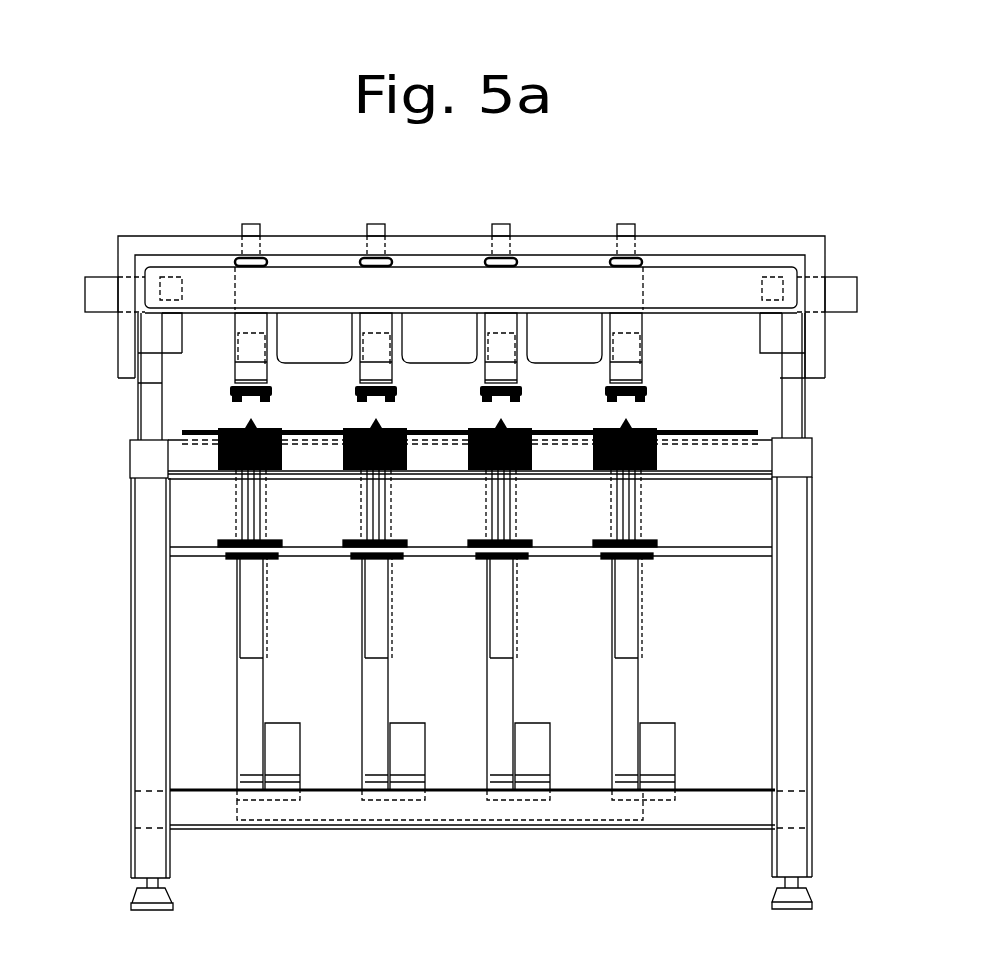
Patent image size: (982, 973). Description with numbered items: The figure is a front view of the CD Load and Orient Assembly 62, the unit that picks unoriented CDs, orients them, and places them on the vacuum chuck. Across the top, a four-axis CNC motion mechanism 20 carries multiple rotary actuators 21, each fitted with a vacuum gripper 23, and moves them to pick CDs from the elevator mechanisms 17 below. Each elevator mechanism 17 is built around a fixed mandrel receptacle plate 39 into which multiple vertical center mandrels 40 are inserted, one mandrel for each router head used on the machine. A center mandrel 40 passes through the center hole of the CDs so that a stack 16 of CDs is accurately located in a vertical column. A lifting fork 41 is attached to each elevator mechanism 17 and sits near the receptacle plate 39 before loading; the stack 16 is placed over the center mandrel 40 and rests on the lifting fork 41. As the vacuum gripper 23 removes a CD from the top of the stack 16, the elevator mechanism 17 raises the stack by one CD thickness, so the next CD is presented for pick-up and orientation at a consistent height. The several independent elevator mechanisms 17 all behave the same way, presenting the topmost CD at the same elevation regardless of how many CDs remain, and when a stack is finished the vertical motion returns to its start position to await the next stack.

The CD Load and Orient Assembly 62 is at (249, 128).
The 4-Axis CNC motion mechanism 20 is at (703, 285).
The rotary actuator 21 is at (248, 377).
The vacuum gripper 23 is at (648, 393).
The stack of CD's 16 is at (182, 430).
The lifting fork 41 is at (233, 487).
The center mandrel 40 is at (627, 527).
The mandrel receptacle plate 39 is at (750, 543).
The elevator mechanism 17 is at (665, 772).